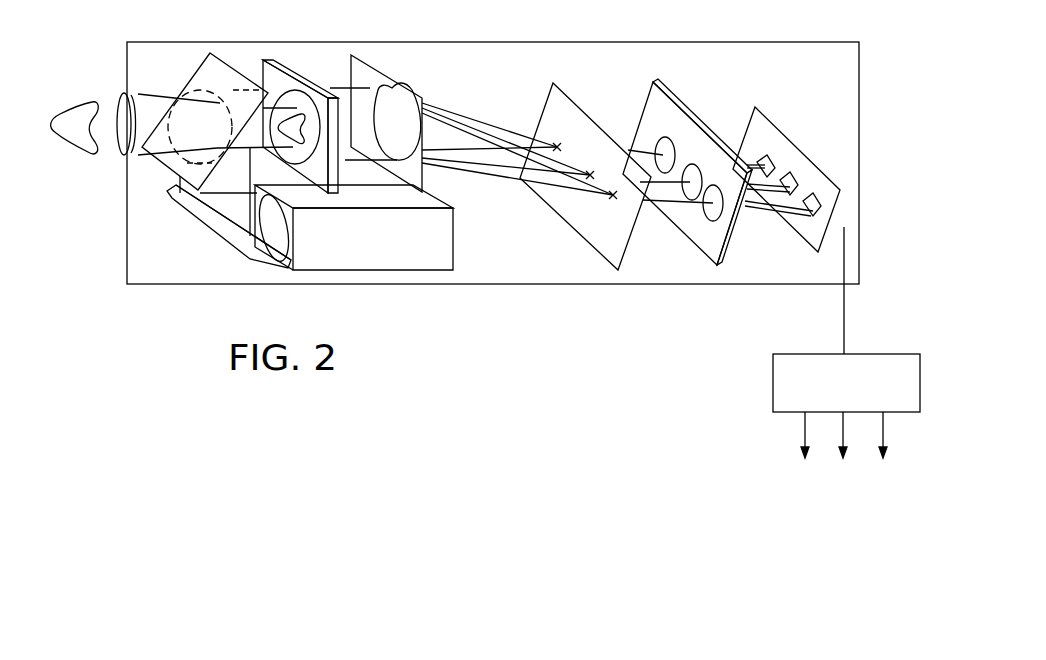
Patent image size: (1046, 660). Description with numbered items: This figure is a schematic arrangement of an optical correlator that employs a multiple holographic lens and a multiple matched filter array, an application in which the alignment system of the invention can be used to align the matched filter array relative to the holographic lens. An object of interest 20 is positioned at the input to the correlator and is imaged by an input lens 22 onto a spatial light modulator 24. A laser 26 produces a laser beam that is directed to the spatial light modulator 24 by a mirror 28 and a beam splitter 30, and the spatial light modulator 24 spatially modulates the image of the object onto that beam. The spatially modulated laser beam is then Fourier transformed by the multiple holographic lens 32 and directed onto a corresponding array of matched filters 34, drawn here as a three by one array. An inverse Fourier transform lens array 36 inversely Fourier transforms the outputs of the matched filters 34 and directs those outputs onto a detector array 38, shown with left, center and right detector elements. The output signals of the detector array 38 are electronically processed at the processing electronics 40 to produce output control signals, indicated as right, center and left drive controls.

The object of interest 20 is at (67, 107).
The input lens 22 is at (117, 93).
The spatial light modulator 24 is at (286, 72).
The laser 26 is at (453, 251).
The mirror 28 is at (200, 220).
The beam splitter 30 is at (190, 78).
The multiple holographic lens 32 is at (458, 68).
The array of matched filters 34 is at (645, 70).
The inverse Fourier transform lens array 36 is at (798, 93).
The detector array 38 is at (797, 233).
The processing electronics 40 is at (772, 403).